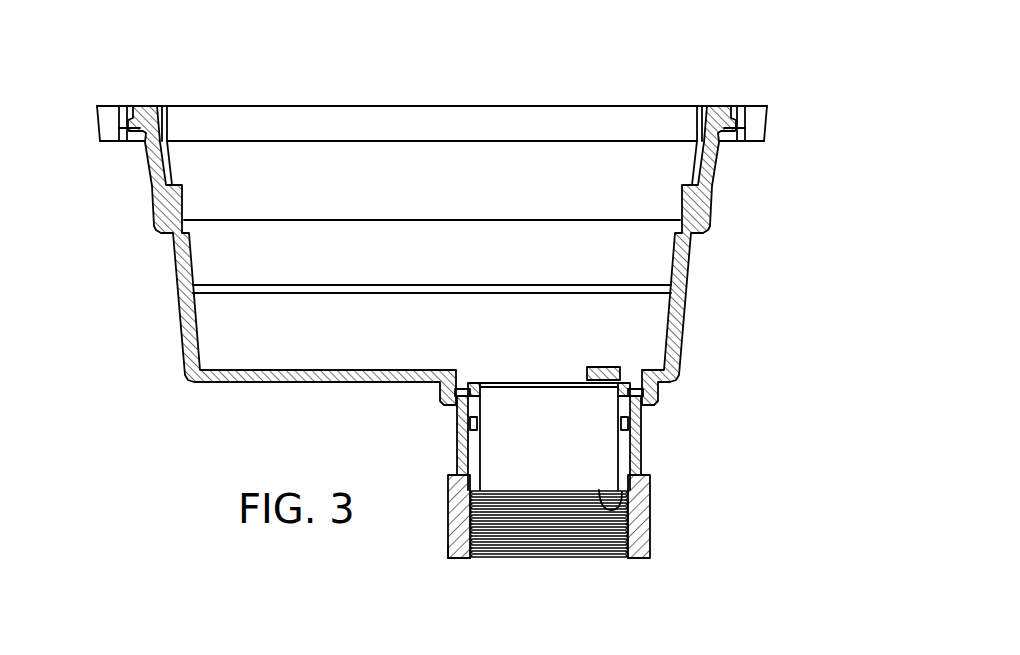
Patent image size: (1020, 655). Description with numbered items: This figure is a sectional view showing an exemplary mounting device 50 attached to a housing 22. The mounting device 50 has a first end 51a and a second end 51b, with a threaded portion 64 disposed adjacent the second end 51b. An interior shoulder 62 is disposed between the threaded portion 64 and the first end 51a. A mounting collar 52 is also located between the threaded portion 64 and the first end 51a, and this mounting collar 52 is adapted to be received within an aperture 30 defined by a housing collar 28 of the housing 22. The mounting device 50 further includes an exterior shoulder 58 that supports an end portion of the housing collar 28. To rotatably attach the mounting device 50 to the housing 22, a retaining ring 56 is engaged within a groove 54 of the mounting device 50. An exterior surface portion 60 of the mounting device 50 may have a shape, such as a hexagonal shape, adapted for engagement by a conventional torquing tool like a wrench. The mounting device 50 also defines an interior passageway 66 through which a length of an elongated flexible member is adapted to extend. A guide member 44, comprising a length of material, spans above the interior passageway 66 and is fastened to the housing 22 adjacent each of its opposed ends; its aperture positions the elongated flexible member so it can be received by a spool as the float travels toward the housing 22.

The housing 22 is at (432, 208).
The housing collar 28 is at (455, 426).
The aperture 30 is at (481, 436).
The guide member 44 is at (595, 342).
The mounting device 50 is at (528, 466).
The first end 51a is at (466, 384).
The second end 51b is at (449, 559).
The mounting collar 52 is at (640, 430).
The groove 54 is at (630, 391).
The retaining ring 56 is at (452, 391).
The exterior shoulder 58 is at (642, 467).
The exterior surface portion 60 is at (652, 516).
The interior shoulder 62 is at (599, 490).
The threaded portion 64 is at (540, 508).
The interior passageway 66 is at (546, 400).